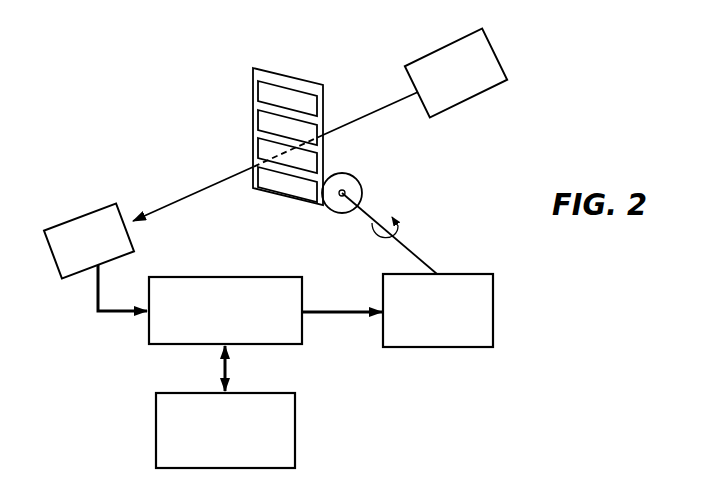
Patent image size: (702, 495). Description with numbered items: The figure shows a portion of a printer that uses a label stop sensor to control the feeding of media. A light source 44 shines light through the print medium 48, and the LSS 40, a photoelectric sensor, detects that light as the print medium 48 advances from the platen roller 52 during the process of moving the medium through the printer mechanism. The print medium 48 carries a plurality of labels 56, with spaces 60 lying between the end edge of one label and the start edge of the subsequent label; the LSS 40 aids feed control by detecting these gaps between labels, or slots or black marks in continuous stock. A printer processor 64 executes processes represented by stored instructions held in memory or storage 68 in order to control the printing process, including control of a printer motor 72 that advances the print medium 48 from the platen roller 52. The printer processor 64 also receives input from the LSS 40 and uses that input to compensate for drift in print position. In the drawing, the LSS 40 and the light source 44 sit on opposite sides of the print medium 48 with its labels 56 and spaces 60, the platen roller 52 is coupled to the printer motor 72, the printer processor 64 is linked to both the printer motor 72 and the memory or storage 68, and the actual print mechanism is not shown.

The label stop sensor (LSS) 40 is at (82, 215).
The light source 44 is at (472, 95).
The print medium 48 is at (288, 80).
The platen roller 52 is at (348, 180).
The labels 56 is at (313, 103).
The spaces 60 is at (288, 137).
The printer processor 64 is at (223, 277).
The memory or storage 68 is at (155, 430).
The printer motor 72 is at (438, 347).